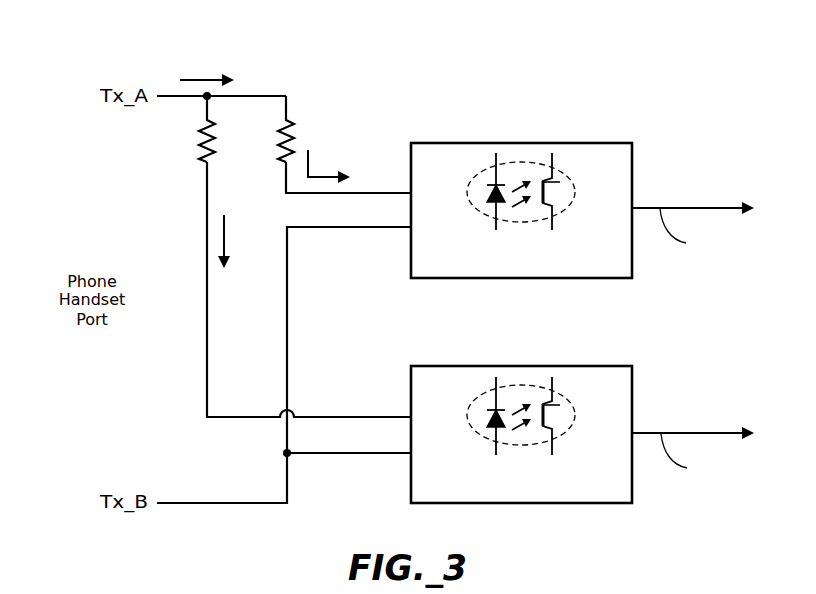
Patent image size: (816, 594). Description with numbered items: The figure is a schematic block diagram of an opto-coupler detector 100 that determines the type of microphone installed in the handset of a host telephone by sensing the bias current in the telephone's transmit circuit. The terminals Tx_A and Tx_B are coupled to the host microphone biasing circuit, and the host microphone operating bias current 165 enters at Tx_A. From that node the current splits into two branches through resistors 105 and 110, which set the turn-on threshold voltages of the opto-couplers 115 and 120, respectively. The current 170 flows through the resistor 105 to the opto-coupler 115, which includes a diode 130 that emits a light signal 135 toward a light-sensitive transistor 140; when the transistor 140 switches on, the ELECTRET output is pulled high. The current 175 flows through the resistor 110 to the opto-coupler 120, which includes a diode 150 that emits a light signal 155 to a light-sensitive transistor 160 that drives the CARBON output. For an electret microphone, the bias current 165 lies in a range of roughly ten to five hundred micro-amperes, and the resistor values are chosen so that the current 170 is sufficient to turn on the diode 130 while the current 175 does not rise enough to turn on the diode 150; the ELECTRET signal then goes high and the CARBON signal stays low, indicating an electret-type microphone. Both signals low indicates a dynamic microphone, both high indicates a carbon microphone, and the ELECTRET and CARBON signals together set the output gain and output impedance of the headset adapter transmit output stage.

The opto-coupler detector 100 is at (561, 58).
The resistor 105 is at (200, 146).
The resistor 110 is at (294, 136).
The opto-coupler 115 is at (633, 412).
The opto-coupler 120 is at (633, 178).
The diode 130 is at (489, 415).
The light signal 135 is at (516, 407).
The light-sensitive transistor 140 is at (558, 405).
The diode 150 is at (489, 192).
The light signal 155 is at (516, 184).
The light-sensitive transistor 160 is at (558, 182).
The bias current 165 is at (200, 78).
The current 170 is at (228, 234).
The current 175 is at (316, 172).